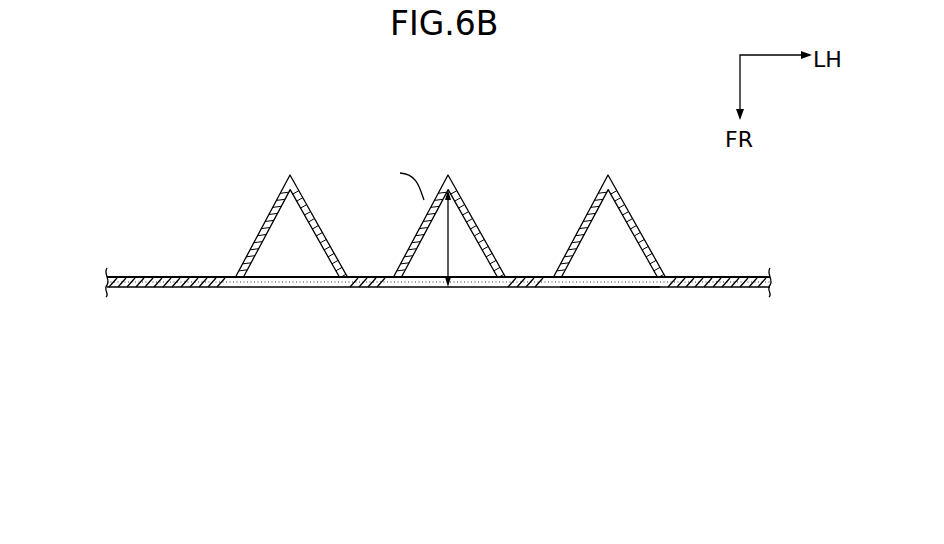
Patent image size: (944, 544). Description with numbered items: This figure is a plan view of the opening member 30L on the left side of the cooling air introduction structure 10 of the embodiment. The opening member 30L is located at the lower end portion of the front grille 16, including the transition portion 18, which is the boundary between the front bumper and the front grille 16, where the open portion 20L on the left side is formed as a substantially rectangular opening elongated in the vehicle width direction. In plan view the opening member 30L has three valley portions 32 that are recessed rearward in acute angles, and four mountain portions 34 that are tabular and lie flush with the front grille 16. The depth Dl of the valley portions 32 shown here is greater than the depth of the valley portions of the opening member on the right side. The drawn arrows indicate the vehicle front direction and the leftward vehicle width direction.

The cooling air introduction structure 10 is at (434, 307).
The front grille 16 is at (140, 290).
The transition portion 18 is at (607, 288).
The open portion on the left side 20L is at (190, 288).
The opening member on the left side 30L is at (510, 288).
The valley portion 32 is at (292, 194).
The mountain portion 34 is at (217, 289).